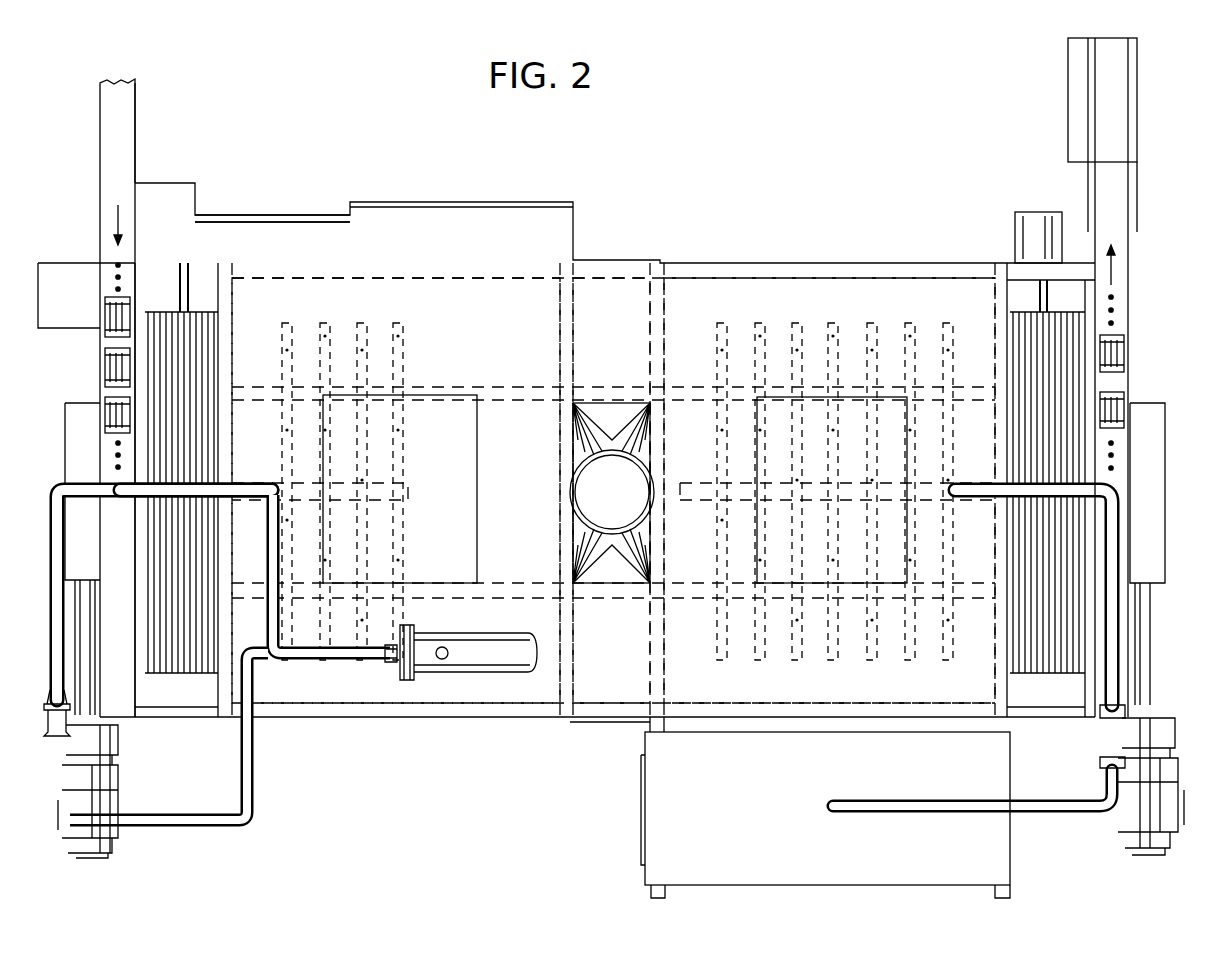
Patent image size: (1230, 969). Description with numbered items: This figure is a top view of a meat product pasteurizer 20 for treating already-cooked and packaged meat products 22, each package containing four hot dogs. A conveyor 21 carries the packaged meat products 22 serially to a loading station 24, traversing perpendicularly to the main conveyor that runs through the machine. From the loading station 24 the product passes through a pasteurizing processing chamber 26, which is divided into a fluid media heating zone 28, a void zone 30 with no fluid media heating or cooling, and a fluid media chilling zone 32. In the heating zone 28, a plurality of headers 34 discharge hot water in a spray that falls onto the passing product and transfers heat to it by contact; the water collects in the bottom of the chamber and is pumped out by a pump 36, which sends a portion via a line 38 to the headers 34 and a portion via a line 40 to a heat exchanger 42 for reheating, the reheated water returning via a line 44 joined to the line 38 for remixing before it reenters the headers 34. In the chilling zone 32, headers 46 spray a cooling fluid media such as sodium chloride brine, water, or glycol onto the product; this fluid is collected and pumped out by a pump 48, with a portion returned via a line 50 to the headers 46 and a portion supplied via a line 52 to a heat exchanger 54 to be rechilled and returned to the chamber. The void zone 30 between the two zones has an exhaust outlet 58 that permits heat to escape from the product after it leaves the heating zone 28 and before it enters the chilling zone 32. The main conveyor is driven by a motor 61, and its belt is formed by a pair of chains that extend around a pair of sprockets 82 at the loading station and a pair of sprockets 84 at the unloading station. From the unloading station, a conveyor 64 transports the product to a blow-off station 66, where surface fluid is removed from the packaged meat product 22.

The meat product pasteurizer 20 is at (628, 260).
The conveyor 21 is at (100, 236).
The meat products 22 is at (104, 406).
The loading station 24 is at (140, 483).
The pasteurizing processing chamber 26 is at (302, 262).
The fluid media heating zone 28 is at (492, 316).
The void zone 30 is at (626, 326).
The fluid media chilling zone 32 is at (782, 311).
The headers 34 is at (359, 324).
The pump 36 is at (120, 798).
The line 38 is at (256, 484).
The line 40 is at (254, 776).
The heat exchanger 42 is at (476, 674).
The line 44 is at (268, 568).
The headers 46 is at (867, 320).
The pump 48 is at (1169, 798).
The line 50 is at (982, 484).
The line 52 is at (1030, 814).
The heat exchanger 54 is at (1012, 865).
The exhaust outlet 58 is at (590, 459).
The motor 61 is at (1040, 212).
The conveyor 64 is at (1128, 308).
The blow-off station 66 is at (1068, 120).
The sprockets 82 is at (182, 312).
The sprockets 84 is at (1050, 670).